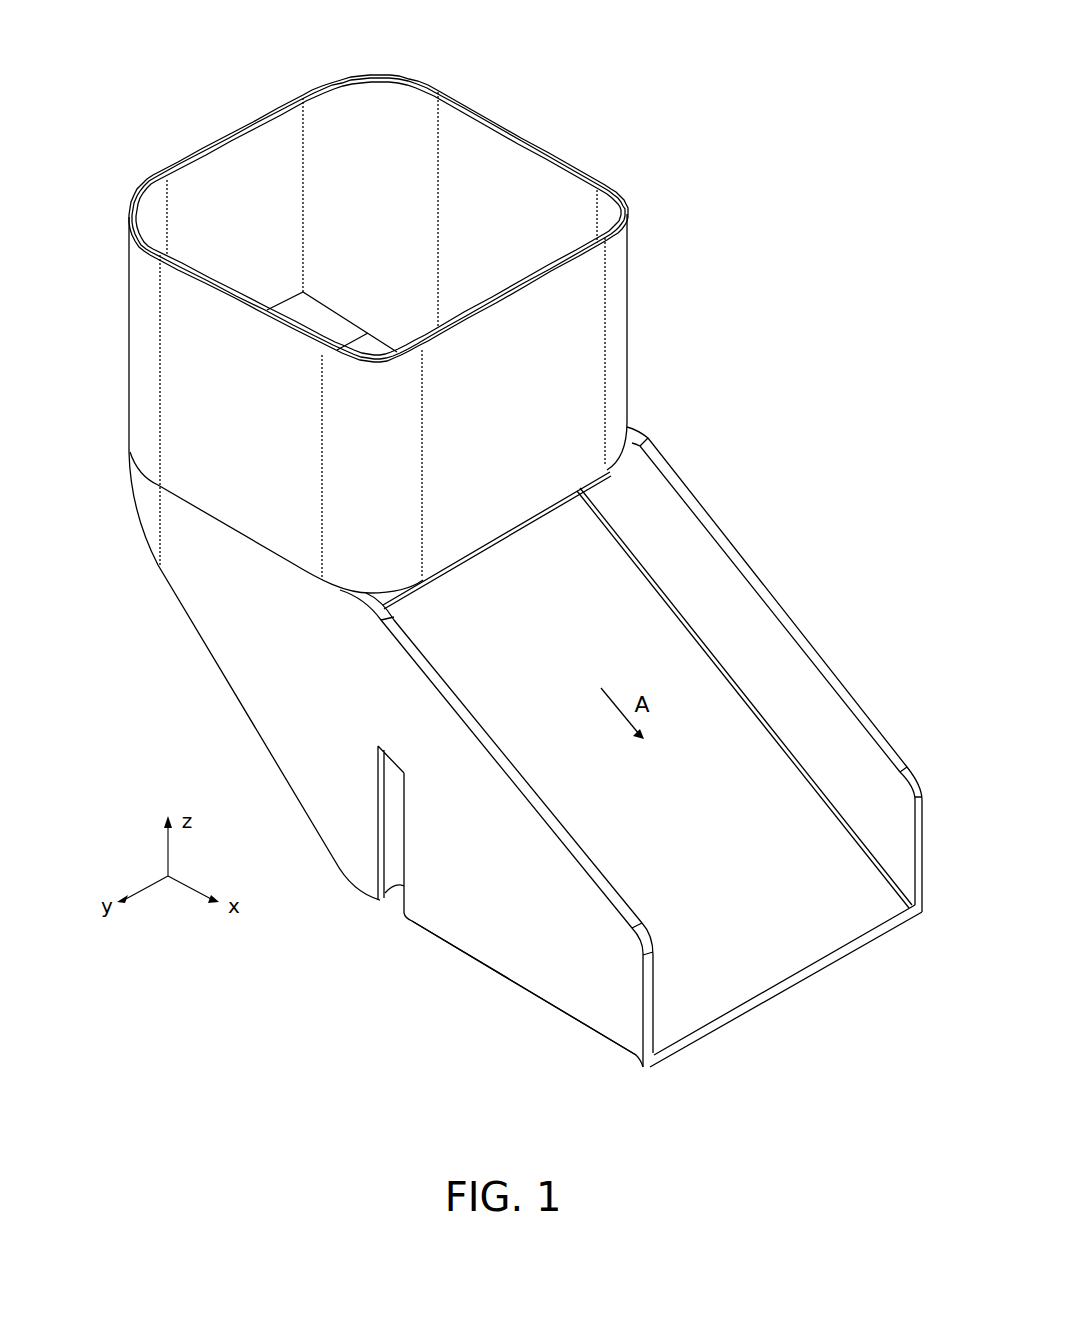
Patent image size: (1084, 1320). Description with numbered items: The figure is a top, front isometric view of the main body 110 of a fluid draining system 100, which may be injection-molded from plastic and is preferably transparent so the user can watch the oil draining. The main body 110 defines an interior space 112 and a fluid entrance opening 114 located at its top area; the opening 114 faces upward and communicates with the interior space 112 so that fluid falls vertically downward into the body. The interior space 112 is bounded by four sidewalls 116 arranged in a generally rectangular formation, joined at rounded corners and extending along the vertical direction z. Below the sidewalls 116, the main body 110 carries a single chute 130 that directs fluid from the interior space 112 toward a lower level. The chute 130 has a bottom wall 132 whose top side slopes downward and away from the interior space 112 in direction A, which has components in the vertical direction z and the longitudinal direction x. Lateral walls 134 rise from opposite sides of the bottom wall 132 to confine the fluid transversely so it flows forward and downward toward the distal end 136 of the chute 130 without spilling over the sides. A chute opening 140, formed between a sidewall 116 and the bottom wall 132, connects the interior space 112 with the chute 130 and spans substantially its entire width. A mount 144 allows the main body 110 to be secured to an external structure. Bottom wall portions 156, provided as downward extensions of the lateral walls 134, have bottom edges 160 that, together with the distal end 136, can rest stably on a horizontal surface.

The fluid draining system 100 is at (705, 166).
The main body 110 is at (644, 315).
The interior space 112 is at (354, 272).
The fluid entrance opening 114 is at (381, 98).
The sidewalls 116 is at (221, 168).
The chute 130 is at (777, 555).
The bottom wall 132 is at (752, 768).
The lateral walls 134 is at (880, 728).
The distal end 136 is at (790, 992).
The chute opening 140 is at (542, 527).
The mount 144 is at (372, 914).
The bottom wall portions 156 is at (545, 975).
The bottom edges 160 is at (584, 1020).